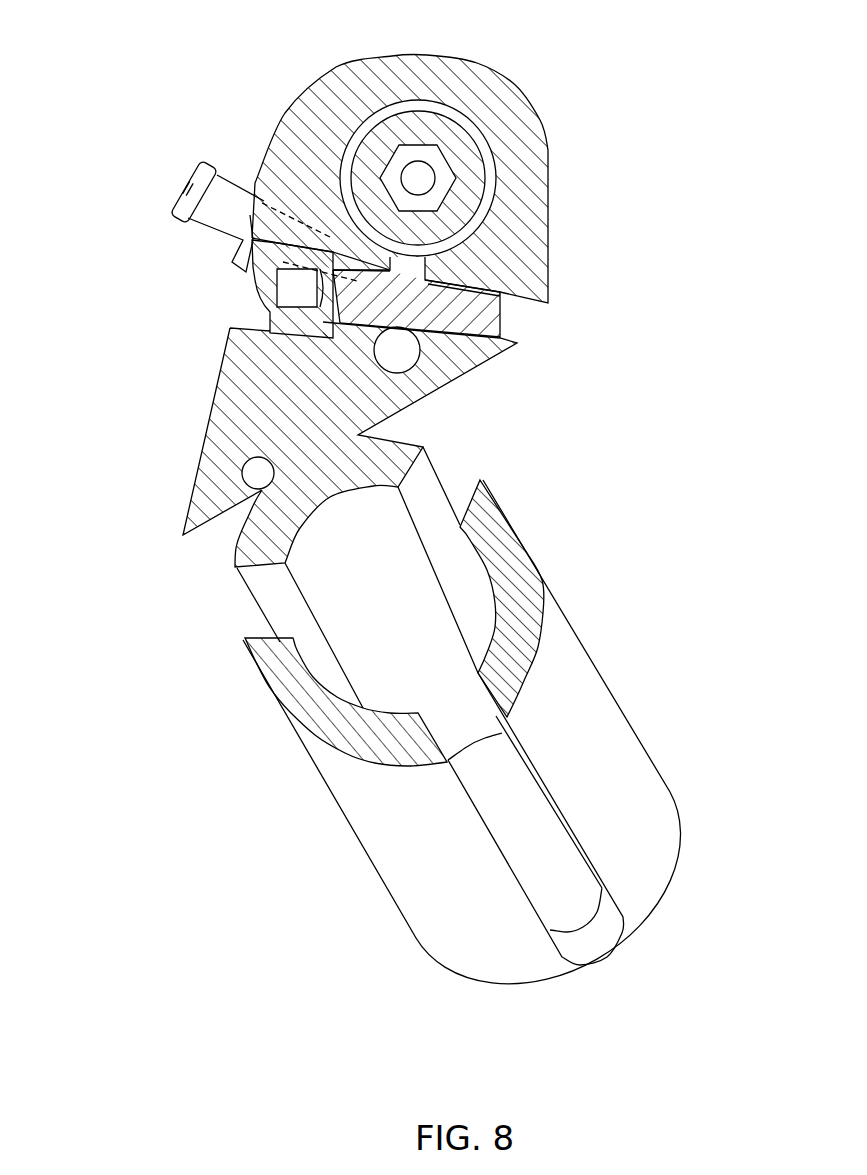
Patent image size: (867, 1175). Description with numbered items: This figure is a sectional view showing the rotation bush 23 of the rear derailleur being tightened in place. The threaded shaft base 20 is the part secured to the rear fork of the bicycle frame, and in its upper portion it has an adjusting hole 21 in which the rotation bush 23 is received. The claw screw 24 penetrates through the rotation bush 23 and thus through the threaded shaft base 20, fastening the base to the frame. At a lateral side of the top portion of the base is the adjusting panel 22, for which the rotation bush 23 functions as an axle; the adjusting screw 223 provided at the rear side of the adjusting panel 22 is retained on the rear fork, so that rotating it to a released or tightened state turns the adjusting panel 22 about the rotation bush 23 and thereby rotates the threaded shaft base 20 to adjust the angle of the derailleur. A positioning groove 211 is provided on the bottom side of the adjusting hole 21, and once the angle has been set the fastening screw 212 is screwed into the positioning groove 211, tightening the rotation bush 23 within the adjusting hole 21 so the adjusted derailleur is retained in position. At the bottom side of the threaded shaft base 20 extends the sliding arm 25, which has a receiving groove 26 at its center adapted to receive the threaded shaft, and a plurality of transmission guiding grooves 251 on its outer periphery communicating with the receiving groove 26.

The threaded shaft base 20 is at (590, 341).
The adjusting hole 21 is at (487, 128).
The rotation bush 23 is at (418, 178).
The claw screw 24 is at (482, 182).
The positioning groove 211 is at (440, 258).
The fastening screw 212 is at (255, 322).
The adjusting panel 22 is at (250, 262).
The adjusting screw 223 is at (238, 188).
The sliding arm 25 is at (610, 687).
The receiving groove 26 is at (430, 605).
The transmission guiding grooves 251 is at (606, 822).